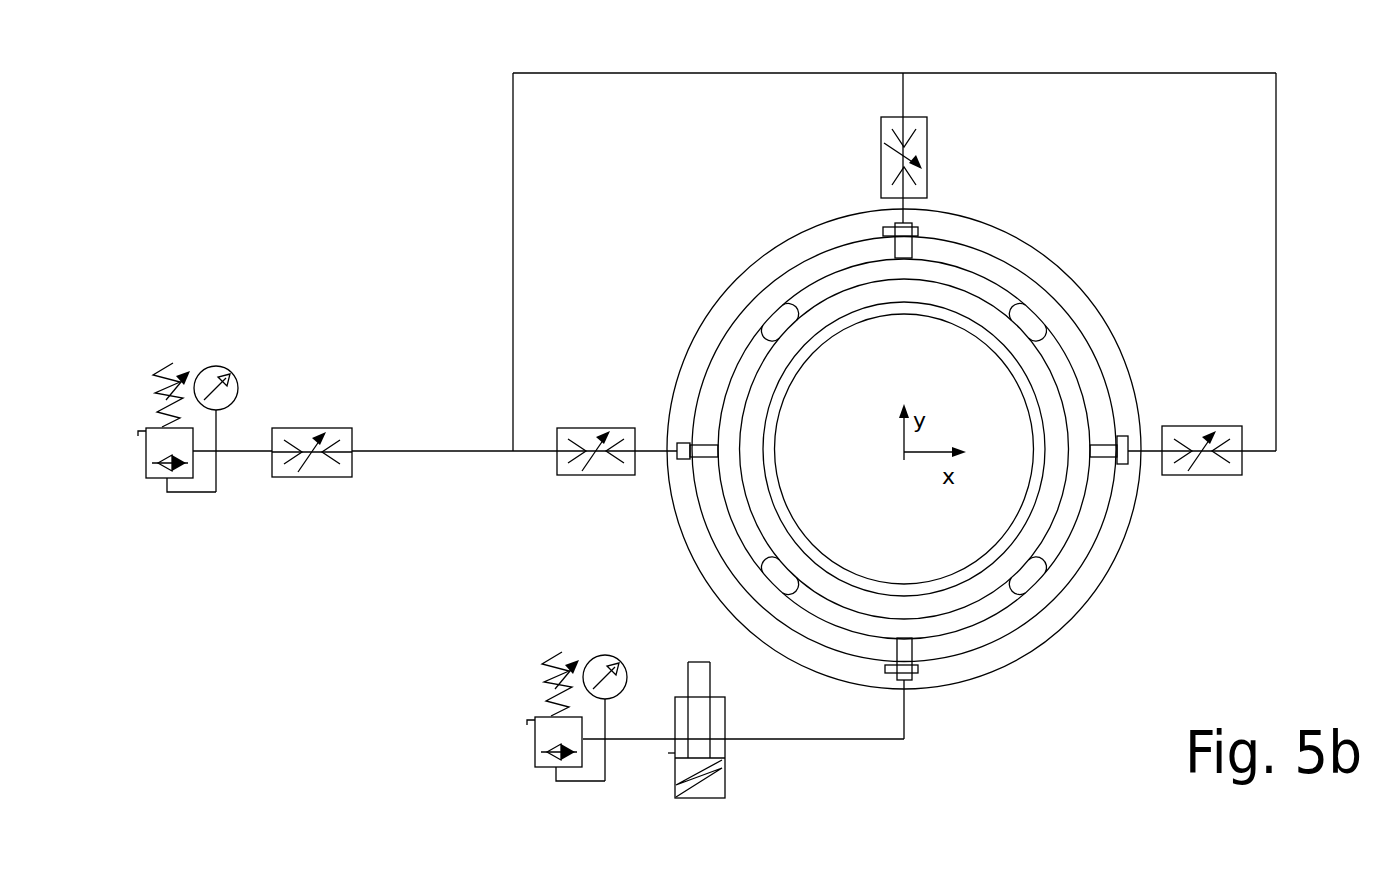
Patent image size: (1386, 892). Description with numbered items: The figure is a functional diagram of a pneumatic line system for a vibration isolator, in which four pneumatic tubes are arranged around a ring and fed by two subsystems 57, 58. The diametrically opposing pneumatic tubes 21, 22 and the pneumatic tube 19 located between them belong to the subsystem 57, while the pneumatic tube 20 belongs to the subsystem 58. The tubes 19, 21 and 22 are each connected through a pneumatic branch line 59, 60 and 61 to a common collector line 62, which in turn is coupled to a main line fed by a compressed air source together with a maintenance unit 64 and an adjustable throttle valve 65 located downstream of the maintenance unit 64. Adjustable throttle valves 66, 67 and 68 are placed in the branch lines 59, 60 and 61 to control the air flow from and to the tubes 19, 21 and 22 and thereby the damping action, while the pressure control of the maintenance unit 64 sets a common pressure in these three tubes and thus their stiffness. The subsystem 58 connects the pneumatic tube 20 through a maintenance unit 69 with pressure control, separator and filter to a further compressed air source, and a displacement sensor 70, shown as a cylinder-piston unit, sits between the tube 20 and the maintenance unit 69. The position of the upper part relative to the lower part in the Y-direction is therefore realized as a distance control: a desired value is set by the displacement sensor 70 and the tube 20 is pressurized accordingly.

The pneumatic tube 19 is at (1000, 290).
The pneumatic tube 20 is at (950, 627).
The pneumatic tube 21 is at (1059, 554).
The pneumatic tube 22 is at (737, 528).
The subsystem 57 is at (1084, 68).
The subsystem 58 is at (827, 752).
The pneumatic branch line 59 is at (905, 95).
The pneumatic branch line 60 is at (1265, 453).
The pneumatic branch line 61 is at (527, 450).
The common collector line 62 is at (611, 73).
The maintenance unit 64 is at (200, 493).
The adjustable throttle valve 65 is at (300, 427).
The adjustable throttle valve 66 is at (930, 160).
The adjustable throttle valve 67 is at (1182, 425).
The adjustable throttle valve 68 is at (592, 427).
The maintenance unit 69 is at (580, 782).
The displacement sensor 70 is at (695, 800).